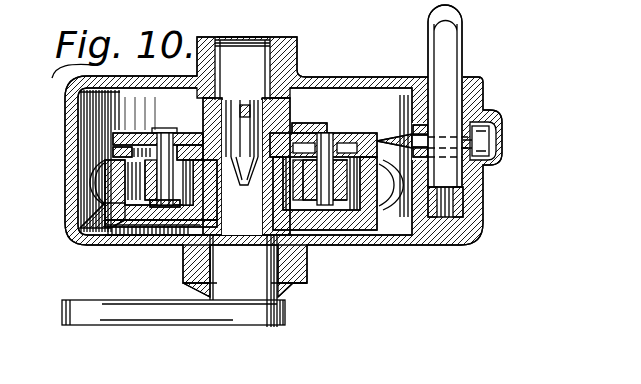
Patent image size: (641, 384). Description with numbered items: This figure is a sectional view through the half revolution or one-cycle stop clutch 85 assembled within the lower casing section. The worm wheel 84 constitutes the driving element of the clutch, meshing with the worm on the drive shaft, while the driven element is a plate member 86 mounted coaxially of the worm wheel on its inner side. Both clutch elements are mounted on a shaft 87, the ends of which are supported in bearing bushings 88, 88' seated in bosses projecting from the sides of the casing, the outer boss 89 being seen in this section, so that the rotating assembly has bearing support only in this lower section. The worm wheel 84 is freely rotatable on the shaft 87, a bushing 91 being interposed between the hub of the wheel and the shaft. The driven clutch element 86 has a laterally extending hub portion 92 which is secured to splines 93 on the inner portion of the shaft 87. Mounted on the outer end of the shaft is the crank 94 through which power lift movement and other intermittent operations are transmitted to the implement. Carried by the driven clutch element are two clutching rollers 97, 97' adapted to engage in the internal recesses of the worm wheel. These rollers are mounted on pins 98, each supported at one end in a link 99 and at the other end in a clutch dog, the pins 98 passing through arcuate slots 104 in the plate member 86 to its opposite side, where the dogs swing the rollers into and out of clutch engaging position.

The worm wheel 84 is at (90, 205).
The half revolution or one-cycle stop clutch 85 is at (160, 234).
The plate member 86 is at (113, 152).
The shaft 87 is at (243, 292).
The bearing bushing 88 is at (272, 265).
The bearing bushing 88' is at (291, 57).
The outer boss 89 is at (312, 283).
The bushing 91 is at (278, 205).
The hub portion 92 is at (203, 120).
The splines 93 is at (260, 133).
The crank 94 is at (145, 326).
The clutching roller 97 is at (354, 200).
The clutching roller 97' is at (109, 167).
The pins 98 is at (100, 213).
The link 99 is at (133, 243).
The arcuate slots 104 is at (363, 127).